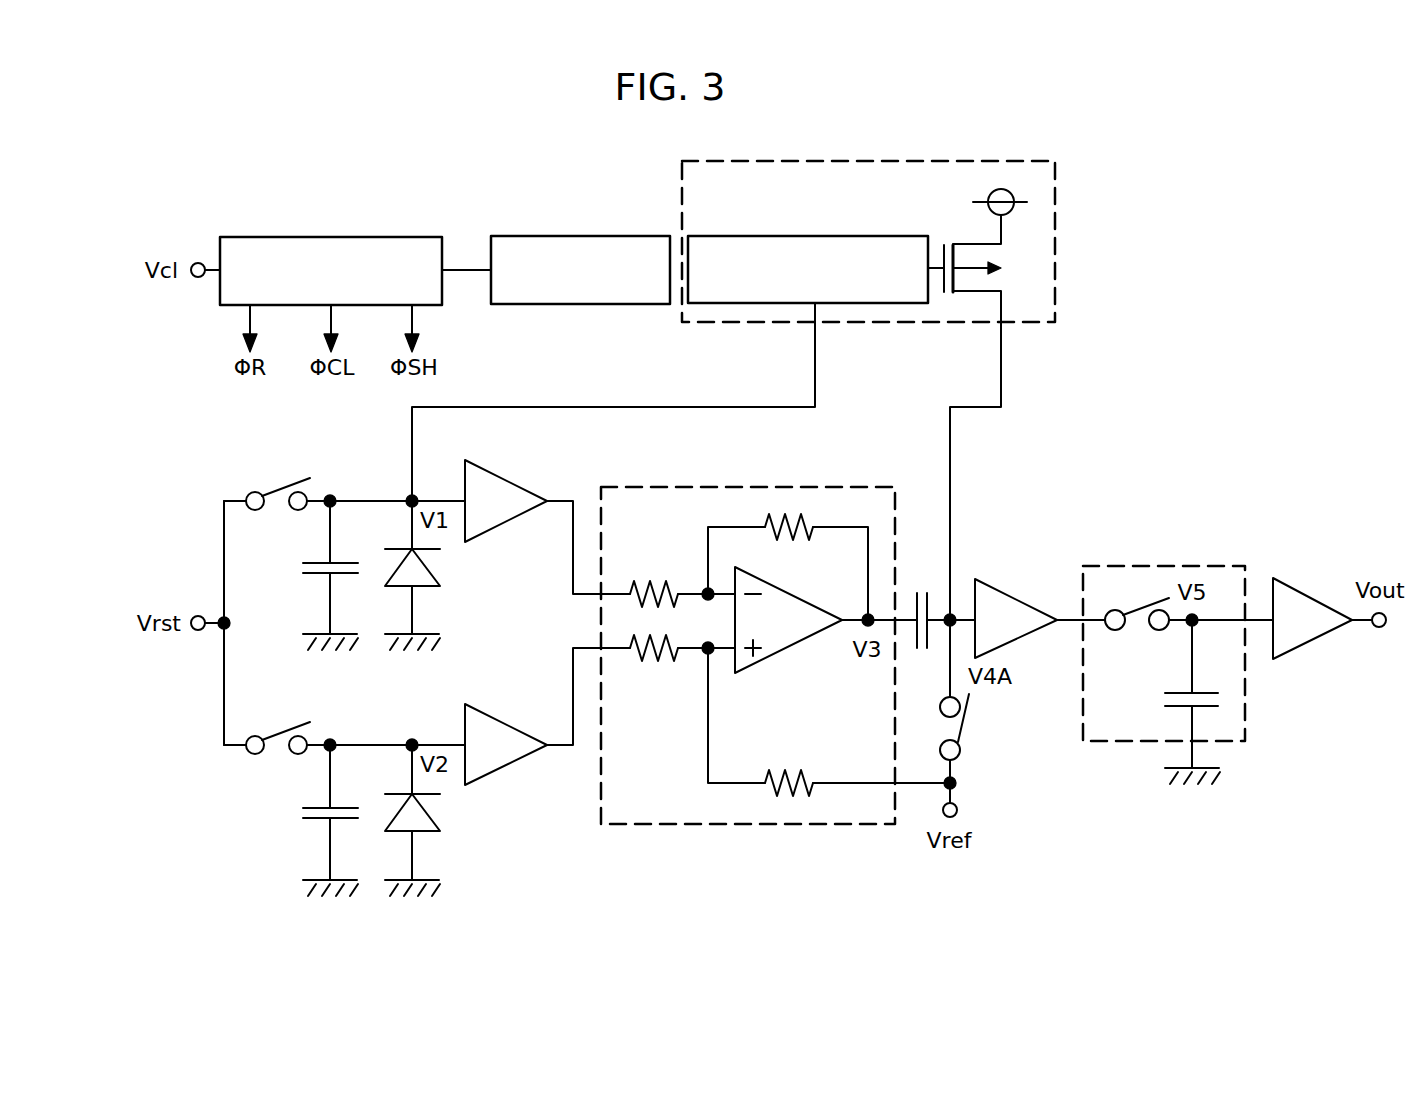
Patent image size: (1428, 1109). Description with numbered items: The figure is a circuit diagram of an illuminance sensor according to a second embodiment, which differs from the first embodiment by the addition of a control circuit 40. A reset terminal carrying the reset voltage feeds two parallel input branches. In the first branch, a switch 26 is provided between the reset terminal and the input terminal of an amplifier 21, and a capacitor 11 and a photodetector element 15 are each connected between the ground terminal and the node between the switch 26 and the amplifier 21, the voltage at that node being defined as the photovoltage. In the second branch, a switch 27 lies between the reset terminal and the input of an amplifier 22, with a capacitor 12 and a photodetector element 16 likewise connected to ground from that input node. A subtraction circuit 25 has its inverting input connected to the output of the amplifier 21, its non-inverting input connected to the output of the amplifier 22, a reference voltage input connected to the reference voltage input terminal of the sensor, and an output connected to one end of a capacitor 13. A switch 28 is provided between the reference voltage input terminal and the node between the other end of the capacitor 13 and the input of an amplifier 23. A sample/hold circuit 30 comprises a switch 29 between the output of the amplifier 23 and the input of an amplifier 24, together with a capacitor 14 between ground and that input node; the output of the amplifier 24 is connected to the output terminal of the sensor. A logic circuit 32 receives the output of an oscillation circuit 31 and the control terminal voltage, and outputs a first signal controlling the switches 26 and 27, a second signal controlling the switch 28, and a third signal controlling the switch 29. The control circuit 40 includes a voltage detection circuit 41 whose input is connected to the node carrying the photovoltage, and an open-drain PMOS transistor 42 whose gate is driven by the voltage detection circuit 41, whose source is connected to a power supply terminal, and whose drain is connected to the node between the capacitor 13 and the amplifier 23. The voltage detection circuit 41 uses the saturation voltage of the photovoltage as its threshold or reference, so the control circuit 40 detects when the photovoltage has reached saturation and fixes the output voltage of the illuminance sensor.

The capacitor 11 is at (298, 573).
The capacitor 12 is at (298, 818).
The capacitor 13 is at (920, 591).
The capacitor 14 is at (1158, 702).
The photodetector element 15 is at (427, 553).
The photodetector element 16 is at (427, 798).
The amplifier 21 is at (519, 483).
The amplifier 22 is at (519, 727).
The amplifier 23 is at (1003, 577).
The amplifier 24 is at (1319, 598).
The subtraction circuit 25 is at (864, 488).
The switch 26 is at (286, 516).
The switch 27 is at (286, 760).
The switch 28 is at (966, 742).
The switch 29 is at (1134, 630).
The sample/hold circuit 30 is at (1132, 564).
The oscillation circuit 31 is at (540, 235).
The logic circuit 32 is at (332, 236).
The control circuit 40 is at (808, 158).
The voltage detection circuit 41 is at (810, 235).
The PMOS transistor 42 is at (942, 232).